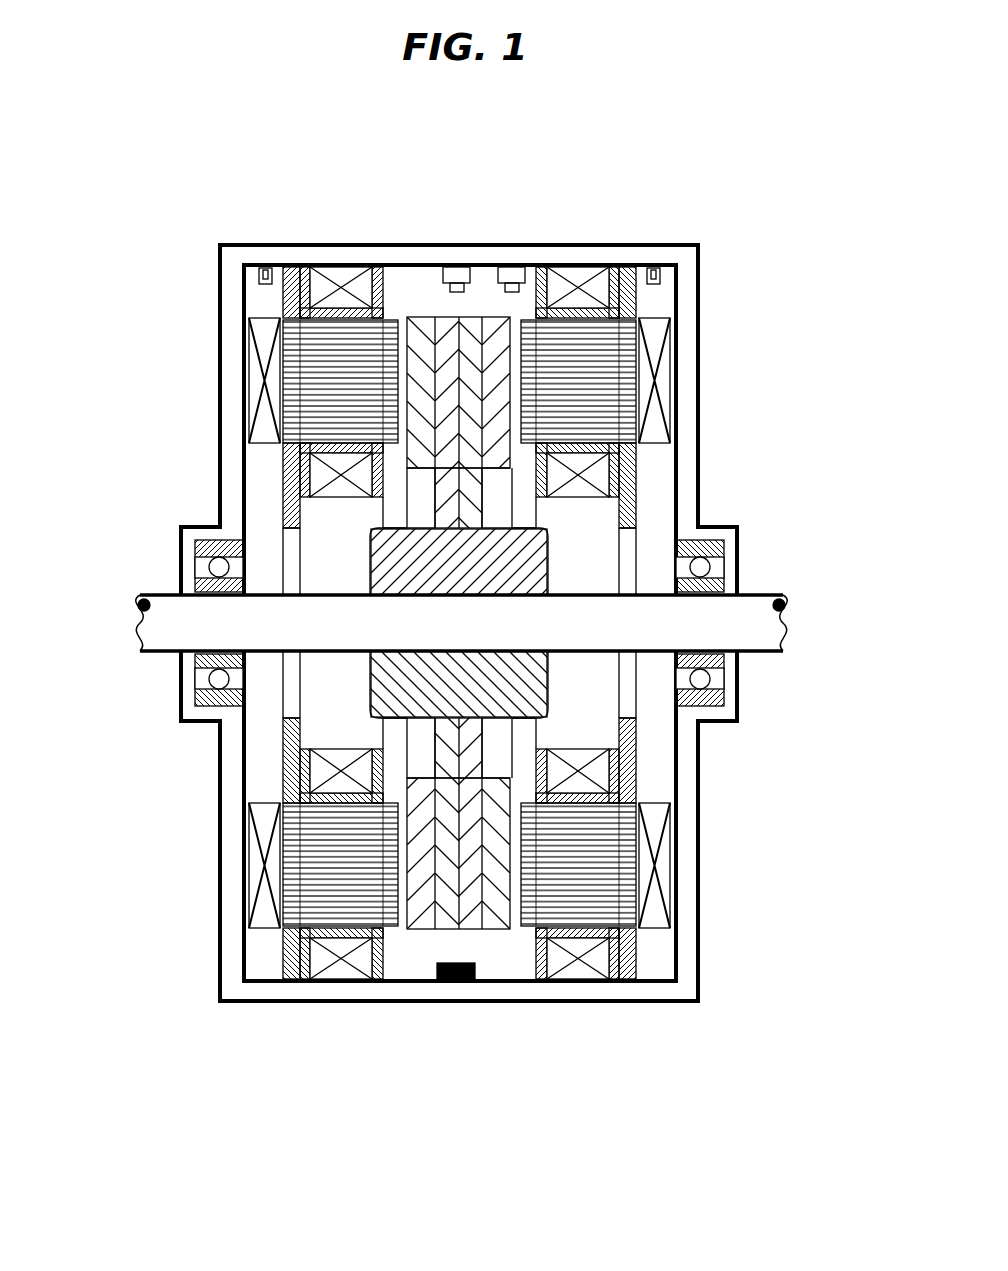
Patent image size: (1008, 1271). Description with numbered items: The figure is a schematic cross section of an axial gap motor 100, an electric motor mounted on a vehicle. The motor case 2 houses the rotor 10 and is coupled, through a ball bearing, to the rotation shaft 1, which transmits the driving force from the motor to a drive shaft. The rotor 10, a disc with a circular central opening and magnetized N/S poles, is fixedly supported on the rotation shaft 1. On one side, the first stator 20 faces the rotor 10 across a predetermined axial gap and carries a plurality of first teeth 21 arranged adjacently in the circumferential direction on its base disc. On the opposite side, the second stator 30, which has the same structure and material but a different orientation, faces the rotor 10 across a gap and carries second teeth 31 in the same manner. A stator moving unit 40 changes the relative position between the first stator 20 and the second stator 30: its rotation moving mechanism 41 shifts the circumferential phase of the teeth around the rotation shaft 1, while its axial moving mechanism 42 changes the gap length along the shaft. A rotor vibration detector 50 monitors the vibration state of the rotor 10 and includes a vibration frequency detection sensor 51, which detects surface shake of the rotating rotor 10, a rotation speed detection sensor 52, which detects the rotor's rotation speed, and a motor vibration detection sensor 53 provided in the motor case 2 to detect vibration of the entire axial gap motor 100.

The axial gap motor 100 is at (160, 132).
The rotation shaft 1 is at (757, 637).
The motor case 2 is at (637, 990).
The rotor 10 is at (437, 314).
The first stator 20 is at (549, 687).
The first teeth 21 is at (598, 905).
The second stator 30 is at (459, 616).
The second teeth 31 is at (386, 326).
The stator moving unit 40 is at (470, 552).
The rotation moving mechanism 41 is at (790, 277).
The axial moving mechanism 42 is at (250, 378).
The rotor vibration detector 50 is at (571, 646).
The vibration frequency detection sensor 51 is at (518, 266).
The rotation speed detection sensor 52 is at (460, 266).
The motor vibration detection sensor 53 is at (455, 983).